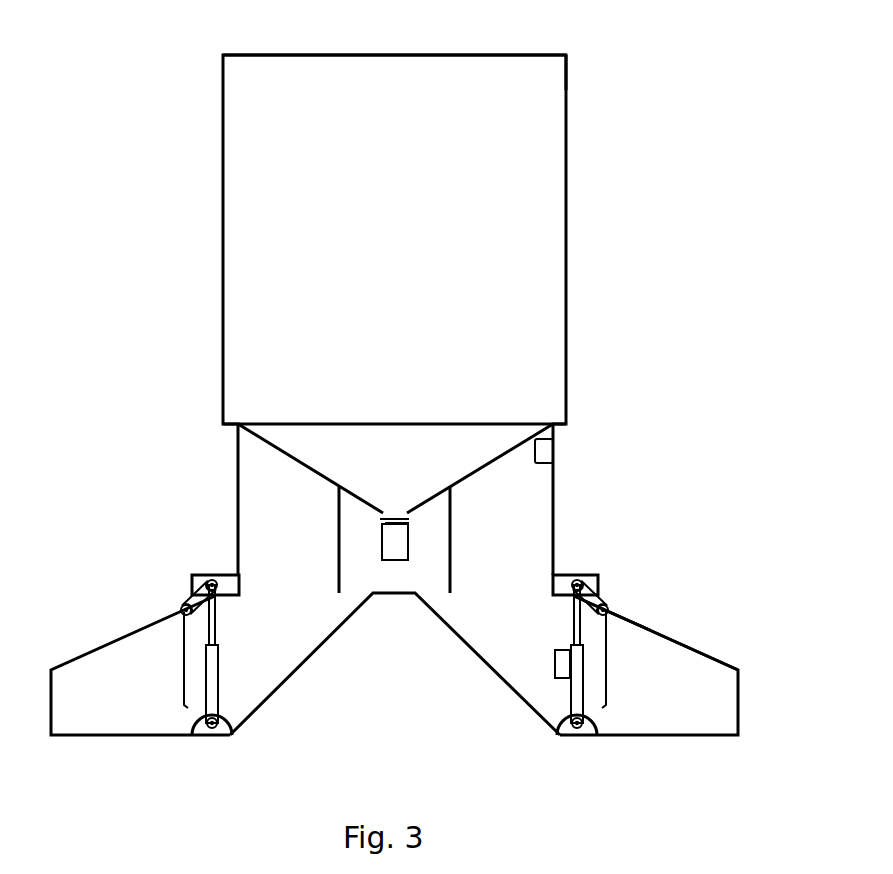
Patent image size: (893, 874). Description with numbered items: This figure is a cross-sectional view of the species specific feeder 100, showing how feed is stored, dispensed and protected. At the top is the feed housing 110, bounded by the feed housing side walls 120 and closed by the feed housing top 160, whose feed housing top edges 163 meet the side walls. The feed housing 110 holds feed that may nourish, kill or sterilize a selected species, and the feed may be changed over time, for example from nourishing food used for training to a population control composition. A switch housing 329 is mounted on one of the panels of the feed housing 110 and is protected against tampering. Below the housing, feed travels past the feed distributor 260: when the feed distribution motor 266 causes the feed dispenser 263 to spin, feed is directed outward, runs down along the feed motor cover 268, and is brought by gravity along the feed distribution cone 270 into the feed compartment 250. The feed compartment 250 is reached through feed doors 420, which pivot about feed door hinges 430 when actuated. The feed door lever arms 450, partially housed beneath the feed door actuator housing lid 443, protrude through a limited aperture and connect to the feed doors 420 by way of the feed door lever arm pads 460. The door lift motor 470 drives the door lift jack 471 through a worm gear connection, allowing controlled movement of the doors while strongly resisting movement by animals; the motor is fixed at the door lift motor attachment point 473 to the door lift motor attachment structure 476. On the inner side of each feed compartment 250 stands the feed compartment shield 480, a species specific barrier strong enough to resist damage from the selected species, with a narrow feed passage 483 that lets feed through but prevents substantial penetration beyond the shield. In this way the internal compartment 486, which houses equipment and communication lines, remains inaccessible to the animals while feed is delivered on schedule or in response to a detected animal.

The species specific feeder 100 is at (222, 218).
The feed housing 110 is at (222, 257).
The feed housing side walls 120 is at (222, 313).
The feed housing top 160 is at (517, 55).
The feed housing top edges 163 is at (568, 58).
The internal compartment 486 is at (299, 550).
The switch housing 329 is at (535, 455).
The feed motor cover 268 is at (451, 530).
The feed distributor 260 is at (379, 528).
The feed dispenser 263 is at (409, 522).
The feed distribution motor 266 is at (408, 560).
The feed distribution cone 270 is at (340, 628).
The feed passage 483 is at (185, 715).
The feed compartment 250 is at (700, 690).
The feed doors 420 is at (670, 643).
The feed door lever arm pads 460 is at (634, 623).
The feed door hinges 430 is at (572, 600).
The feed door actuator housing lid 443 is at (588, 577).
The feed door lever arms 450 is at (605, 592).
The door lift jack 471 is at (573, 645).
The door lift motor 470 is at (555, 664).
The door lift motor attachment point 473 is at (570, 716).
The door lift motor attachment structure 476 is at (597, 722).
The feed compartment shield 480 is at (607, 637).